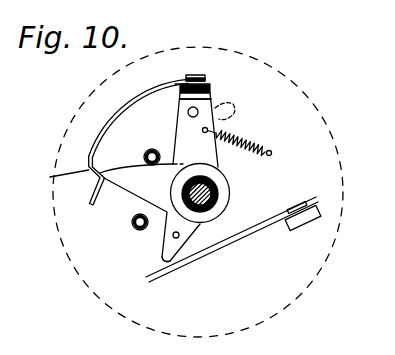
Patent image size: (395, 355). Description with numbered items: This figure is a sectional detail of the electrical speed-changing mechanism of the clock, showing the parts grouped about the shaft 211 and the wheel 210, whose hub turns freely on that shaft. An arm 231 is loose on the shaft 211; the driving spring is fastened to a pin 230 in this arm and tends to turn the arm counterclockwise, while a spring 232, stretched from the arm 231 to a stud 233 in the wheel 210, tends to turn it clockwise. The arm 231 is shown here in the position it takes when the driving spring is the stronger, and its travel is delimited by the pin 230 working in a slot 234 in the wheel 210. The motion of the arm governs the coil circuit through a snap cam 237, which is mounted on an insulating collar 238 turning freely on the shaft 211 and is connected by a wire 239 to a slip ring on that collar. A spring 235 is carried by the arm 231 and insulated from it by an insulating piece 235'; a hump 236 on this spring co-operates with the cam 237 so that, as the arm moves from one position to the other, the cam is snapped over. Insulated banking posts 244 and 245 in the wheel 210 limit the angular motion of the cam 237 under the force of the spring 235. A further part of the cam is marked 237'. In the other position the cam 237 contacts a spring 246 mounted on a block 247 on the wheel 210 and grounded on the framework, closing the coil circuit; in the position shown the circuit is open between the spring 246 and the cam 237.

The wheel 210 is at (292, 292).
The shaft 211 is at (218, 200).
The pin 230 is at (188, 112).
The arm 231 is at (188, 128).
The spring 232 is at (256, 143).
The stud 233 is at (272, 152).
The slot 234 is at (218, 104).
The spring 235 is at (138, 142).
The insulating piece 235' is at (213, 79).
The hump 236 is at (54, 178).
The snap cam 237 is at (164, 168).
The lever plate tip 237' is at (143, 257).
The insulating collar 238 is at (214, 199).
The wire 239 is at (179, 235).
The insulated banking post 244 is at (152, 149).
The insulated banking post 245 is at (132, 226).
The spring 246 is at (221, 249).
The block 247 is at (304, 218).